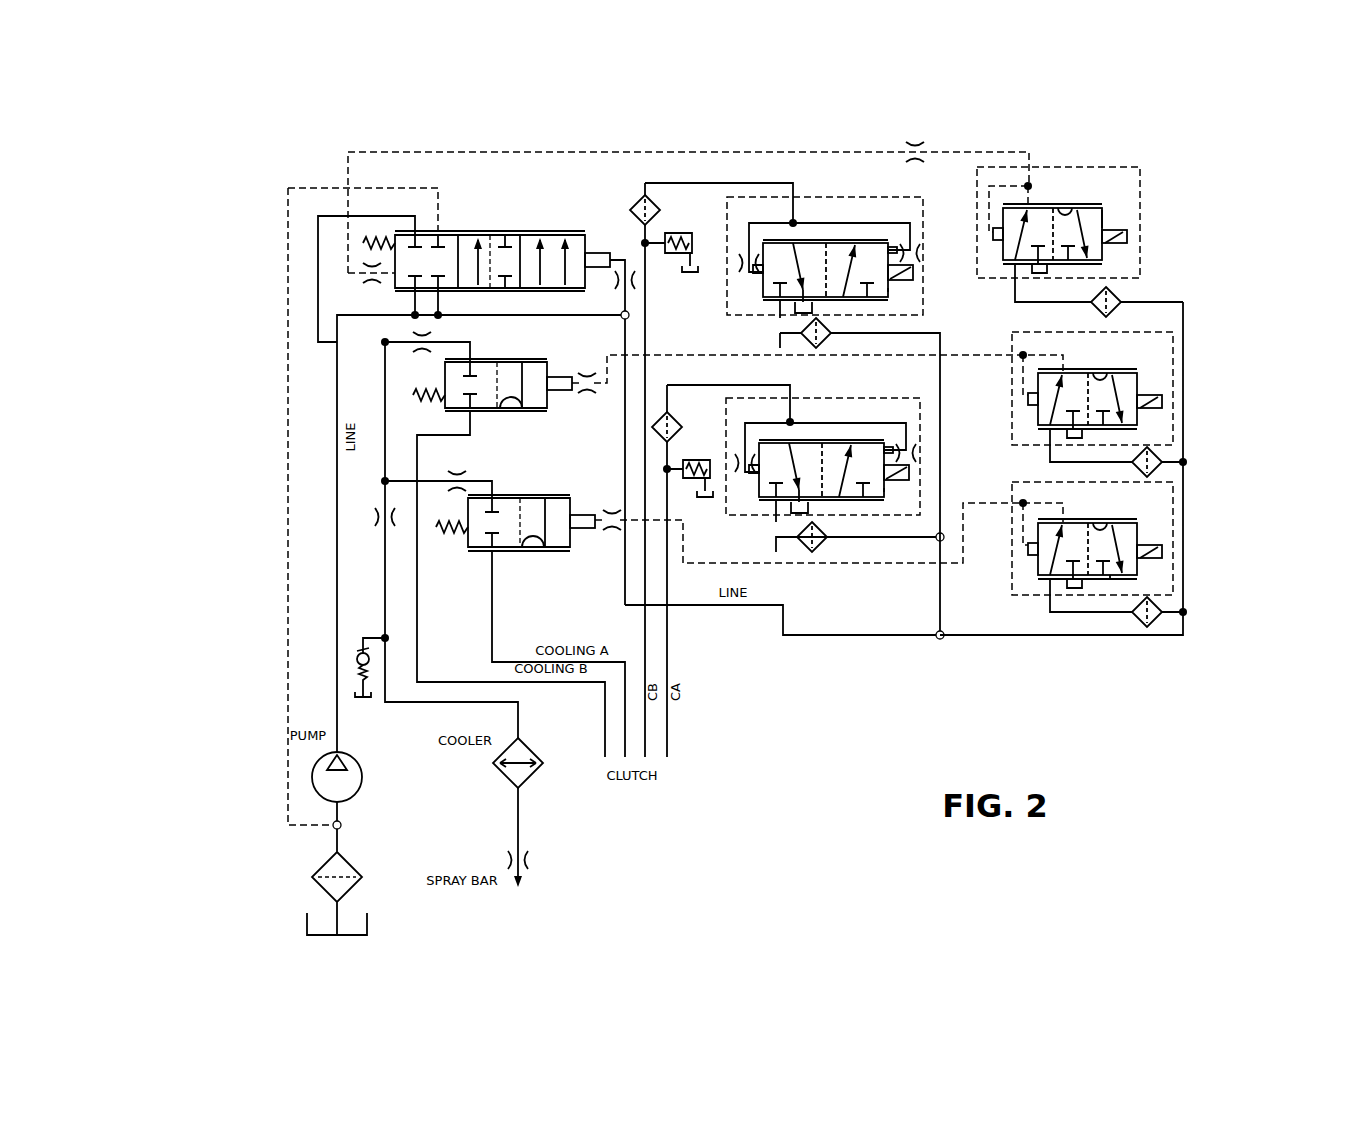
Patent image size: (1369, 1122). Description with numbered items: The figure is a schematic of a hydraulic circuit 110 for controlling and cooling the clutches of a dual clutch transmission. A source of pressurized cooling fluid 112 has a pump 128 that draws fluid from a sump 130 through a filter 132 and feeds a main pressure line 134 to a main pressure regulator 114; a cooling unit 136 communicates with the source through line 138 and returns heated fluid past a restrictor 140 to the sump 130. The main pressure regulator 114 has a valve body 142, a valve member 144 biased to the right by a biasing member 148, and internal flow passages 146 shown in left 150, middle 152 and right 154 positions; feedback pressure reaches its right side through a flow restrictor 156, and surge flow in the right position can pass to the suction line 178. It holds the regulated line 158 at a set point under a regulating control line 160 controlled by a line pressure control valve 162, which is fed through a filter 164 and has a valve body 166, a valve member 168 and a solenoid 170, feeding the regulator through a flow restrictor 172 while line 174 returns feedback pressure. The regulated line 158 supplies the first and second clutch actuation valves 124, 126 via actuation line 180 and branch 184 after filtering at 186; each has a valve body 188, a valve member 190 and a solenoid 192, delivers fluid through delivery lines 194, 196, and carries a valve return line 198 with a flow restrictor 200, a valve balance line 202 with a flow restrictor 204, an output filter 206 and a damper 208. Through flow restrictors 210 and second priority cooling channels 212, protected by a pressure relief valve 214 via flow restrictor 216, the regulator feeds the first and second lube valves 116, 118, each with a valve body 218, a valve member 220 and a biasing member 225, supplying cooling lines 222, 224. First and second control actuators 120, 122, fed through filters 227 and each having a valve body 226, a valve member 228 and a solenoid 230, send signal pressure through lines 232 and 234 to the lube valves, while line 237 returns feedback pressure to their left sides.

The hydraulic circuit 110 is at (264, 170).
The source of pressurized cooling fluid 112 is at (250, 798).
The main pressure regulator 114 is at (515, 195).
The first lube valve 116 is at (556, 487).
The second lube valve 118 is at (540, 358).
The first control actuator 120 is at (1217, 525).
The second control actuator 122 is at (1217, 360).
The first clutch actuation valve 124 is at (932, 428).
The second clutch actuation valve 126 is at (930, 211).
The pump 128 is at (362, 777).
The sump 130 is at (338, 938).
The filter 132 is at (320, 866).
The main pressure line 134 is at (337, 522).
The cooling unit 136 is at (535, 778).
The line 138 is at (518, 712).
The restrictor 140 is at (532, 858).
The valve body 142 is at (528, 232).
The valve member 144 is at (575, 240).
The internal flow passages 146 is at (486, 220).
The biasing member 148 is at (363, 243).
The left position 150 is at (372, 265).
The middle position 152 is at (488, 275).
The right position 154 is at (558, 276).
The flow restrictor 156 is at (620, 272).
The regulated line 158 is at (862, 635).
The regulating control line 160 is at (393, 152).
The line pressure control valve 162 is at (1162, 182).
The filter 164 is at (1112, 302).
The valve body 166 is at (1078, 206).
The valve member 168 is at (1103, 216).
The solenoid 170 is at (1115, 260).
The flow restrictor 172 is at (915, 143).
The line 174 is at (1028, 186).
The suction line 178 is at (288, 388).
The actuation line 180 is at (960, 635).
The branch 184 is at (882, 334).
The filter 186 is at (800, 333).
The valve body 188 is at (820, 240).
The valve member 190 is at (888, 290).
The solenoid 192 is at (905, 262).
The delivery line 194 is at (745, 385).
The delivery line 196 is at (720, 183).
The valve return line 198 is at (760, 223).
The flow restrictor 200 is at (738, 445).
The valve balance line 202 is at (878, 223).
The flow restrictor 204 is at (920, 235).
The output filter 206 is at (648, 200).
The damper 208 is at (665, 262).
The flow restrictor 210 is at (420, 334).
The second priority cooling channel 212 is at (460, 335).
The pressure relief valve 214 is at (357, 655).
The flow restrictor 216 is at (375, 510).
The valve body 218 is at (511, 405).
The valve member 220 is at (572, 518).
The cooling line 222 is at (492, 625).
The cooling line 224 is at (417, 660).
The biasing member 225 is at (413, 395).
The valve body 226 is at (1107, 572).
The filter 227 is at (1150, 455).
The valve member 228 is at (1137, 373).
The solenoid 230 is at (1150, 395).
The line 232 is at (700, 563).
The line 234 is at (647, 355).
The line 237 is at (1023, 355).